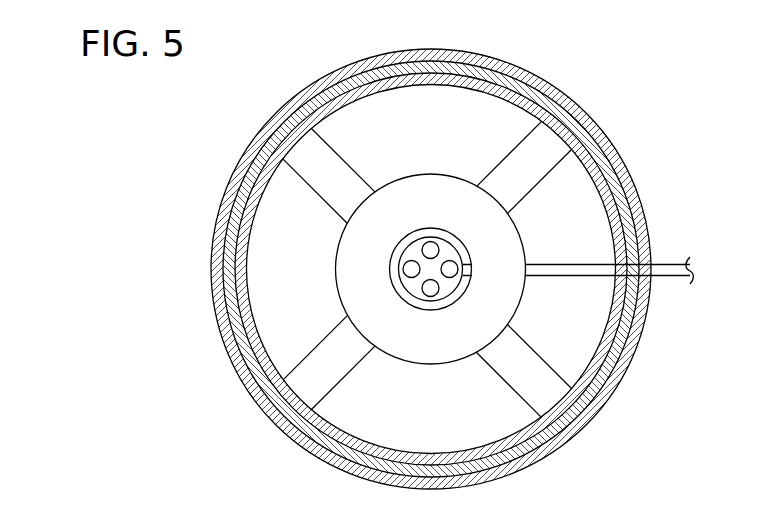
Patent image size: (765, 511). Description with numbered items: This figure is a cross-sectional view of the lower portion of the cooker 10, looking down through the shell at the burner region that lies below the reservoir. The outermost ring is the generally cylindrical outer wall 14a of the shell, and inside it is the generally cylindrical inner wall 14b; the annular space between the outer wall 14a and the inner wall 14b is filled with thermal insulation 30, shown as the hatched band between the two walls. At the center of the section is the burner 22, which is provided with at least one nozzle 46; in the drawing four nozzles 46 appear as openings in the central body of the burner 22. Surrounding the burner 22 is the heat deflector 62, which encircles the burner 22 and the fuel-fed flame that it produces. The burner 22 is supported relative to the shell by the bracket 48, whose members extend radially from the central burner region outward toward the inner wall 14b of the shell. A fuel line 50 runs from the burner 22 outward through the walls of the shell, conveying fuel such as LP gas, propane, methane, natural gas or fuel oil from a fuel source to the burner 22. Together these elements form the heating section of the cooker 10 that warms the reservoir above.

The cooker 10 is at (670, 111).
The outer wall 14a is at (633, 356).
The inner wall 14b is at (613, 306).
The thermal insulation 30 is at (632, 222).
The bracket 48 is at (362, 178).
The heat deflector 62 is at (394, 358).
The burner 22 is at (446, 233).
The nozzle 46 is at (403, 271).
The fuel line 50 is at (568, 263).